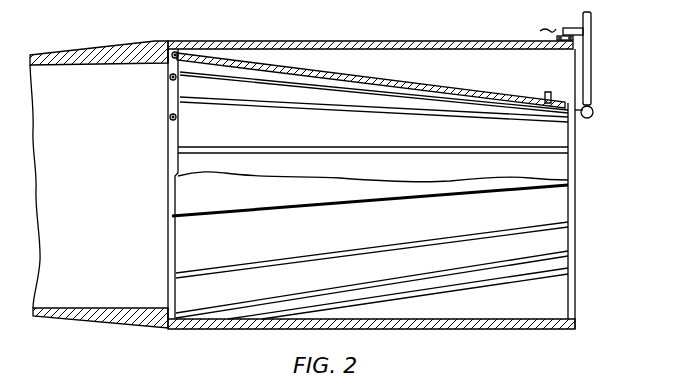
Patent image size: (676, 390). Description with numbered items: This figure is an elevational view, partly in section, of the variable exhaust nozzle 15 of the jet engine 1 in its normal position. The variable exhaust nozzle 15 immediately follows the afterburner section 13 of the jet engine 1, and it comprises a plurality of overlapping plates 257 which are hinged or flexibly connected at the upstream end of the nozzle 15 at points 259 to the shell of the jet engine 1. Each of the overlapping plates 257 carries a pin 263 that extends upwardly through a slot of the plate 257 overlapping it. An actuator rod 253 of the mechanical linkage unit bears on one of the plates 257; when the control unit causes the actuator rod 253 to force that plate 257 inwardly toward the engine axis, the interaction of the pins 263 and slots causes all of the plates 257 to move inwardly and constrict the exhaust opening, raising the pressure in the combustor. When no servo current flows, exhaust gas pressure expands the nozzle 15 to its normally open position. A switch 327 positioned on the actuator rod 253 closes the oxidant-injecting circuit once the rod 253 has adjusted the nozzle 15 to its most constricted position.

The jet engine 1 is at (339, 41).
The afterburner section 13 is at (84, 300).
The variable exhaust nozzle 15 is at (556, 163).
The actuator rod 253 is at (591, 62).
The overlapping plates 257 is at (388, 79).
The hinge points 259 is at (167, 78).
The pin 263 is at (545, 96).
The switch 327 is at (540, 24).